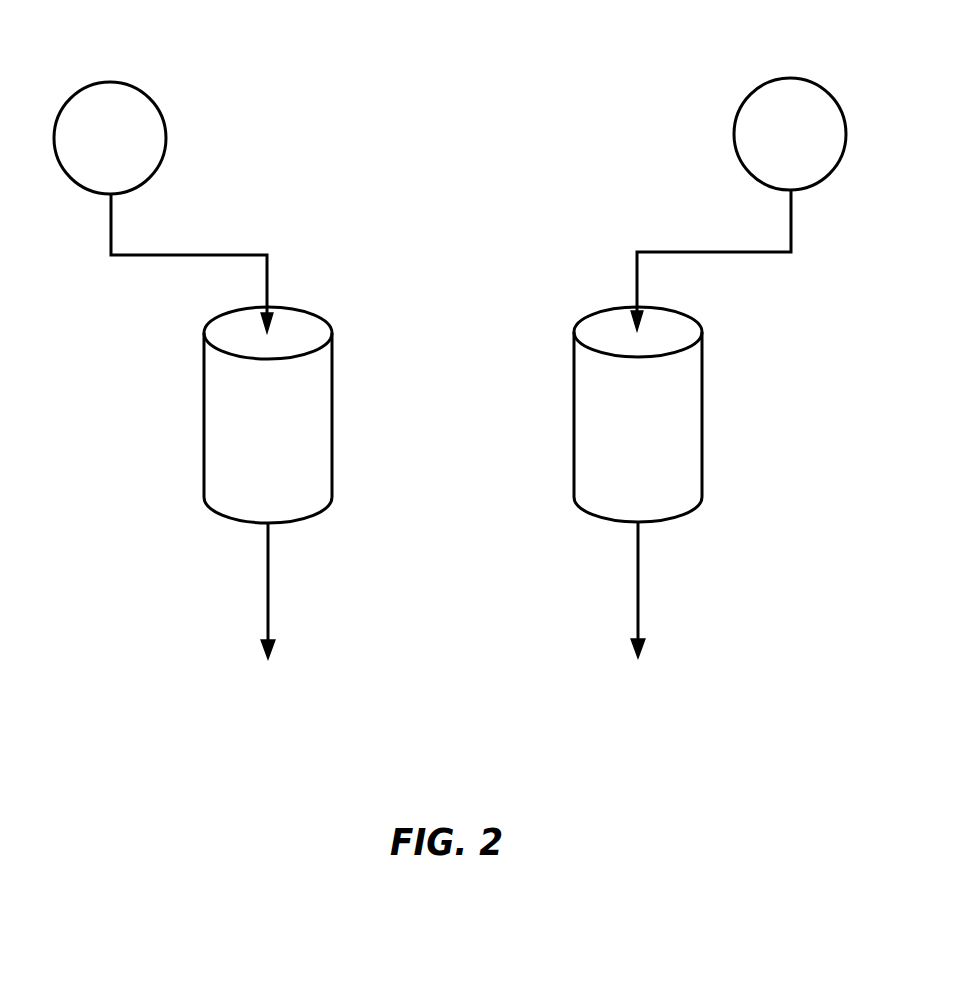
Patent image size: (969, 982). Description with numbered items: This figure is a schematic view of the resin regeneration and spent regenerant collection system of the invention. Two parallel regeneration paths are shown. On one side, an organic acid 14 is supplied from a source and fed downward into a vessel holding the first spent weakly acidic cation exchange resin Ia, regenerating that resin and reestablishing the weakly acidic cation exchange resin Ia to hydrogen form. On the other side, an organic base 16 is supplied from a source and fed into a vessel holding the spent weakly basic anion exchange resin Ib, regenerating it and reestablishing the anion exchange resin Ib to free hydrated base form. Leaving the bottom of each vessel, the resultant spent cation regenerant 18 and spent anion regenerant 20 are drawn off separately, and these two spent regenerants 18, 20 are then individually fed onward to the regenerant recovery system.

The organic acid 14 is at (167, 135).
The organic base 16 is at (743, 98).
The spent weakly acidic cation exchange resin Ia is at (332, 464).
The spent weakly basic anion exchange resin Ib is at (703, 452).
The spent cation regenerant 18 is at (268, 581).
The spent anion regenerant 20 is at (640, 575).